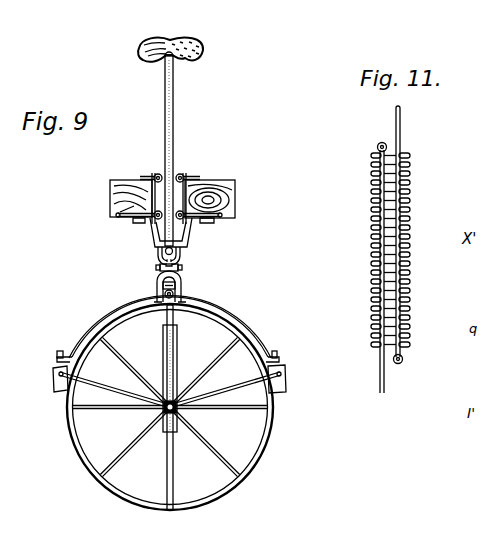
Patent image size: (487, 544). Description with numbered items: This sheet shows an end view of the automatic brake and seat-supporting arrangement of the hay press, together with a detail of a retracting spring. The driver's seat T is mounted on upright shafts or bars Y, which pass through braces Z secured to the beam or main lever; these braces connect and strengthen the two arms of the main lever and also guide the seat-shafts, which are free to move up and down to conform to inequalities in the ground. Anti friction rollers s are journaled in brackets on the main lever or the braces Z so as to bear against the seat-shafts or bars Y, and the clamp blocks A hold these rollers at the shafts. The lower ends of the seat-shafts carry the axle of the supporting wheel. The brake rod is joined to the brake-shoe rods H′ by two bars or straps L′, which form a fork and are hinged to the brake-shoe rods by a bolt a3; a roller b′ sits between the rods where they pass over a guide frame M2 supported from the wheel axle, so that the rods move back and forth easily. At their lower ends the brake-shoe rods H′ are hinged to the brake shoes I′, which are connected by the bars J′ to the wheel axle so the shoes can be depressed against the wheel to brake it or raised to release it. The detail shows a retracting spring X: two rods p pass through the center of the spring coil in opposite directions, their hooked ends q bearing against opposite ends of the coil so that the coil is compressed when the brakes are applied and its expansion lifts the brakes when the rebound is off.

In FIG. 9, the saddle T is at (168, 37).
In FIG. 9, the upright shafts or bars Y is at (178, 151).
In FIG. 9, the anti friction rollers s is at (195, 166).
In FIG. 9, the clamp blocks A is at (160, 198).
In FIG. 9, the braces Z is at (179, 236).
In FIG. 9, the bars or straps L′ is at (150, 249).
In FIG. 9, the bolt a3 is at (183, 268).
In FIG. 9, the fork b′ is at (181, 284).
In FIG. 9, the guide frame M2 is at (164, 294).
In FIG. 9, the brake-shoe rods H′ is at (168, 329).
In FIG. 9, the brake shoes I′ is at (52, 381).
In FIG. 9, the bars J′ is at (297, 379).
In FIG. 11, the rods p is at (402, 225).
In FIG. 11, the springs X is at (405, 184).
In FIG. 11, the hooked ends q is at (380, 143).